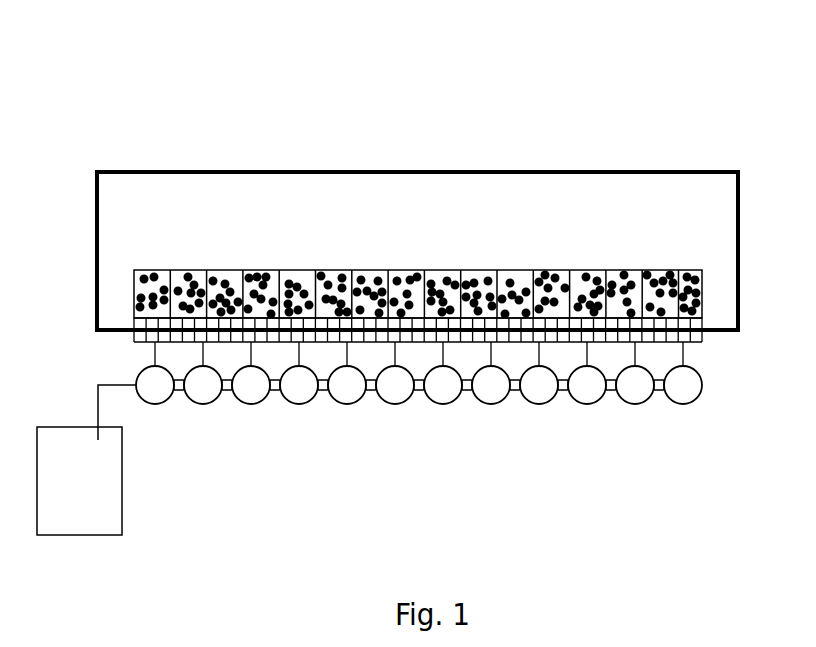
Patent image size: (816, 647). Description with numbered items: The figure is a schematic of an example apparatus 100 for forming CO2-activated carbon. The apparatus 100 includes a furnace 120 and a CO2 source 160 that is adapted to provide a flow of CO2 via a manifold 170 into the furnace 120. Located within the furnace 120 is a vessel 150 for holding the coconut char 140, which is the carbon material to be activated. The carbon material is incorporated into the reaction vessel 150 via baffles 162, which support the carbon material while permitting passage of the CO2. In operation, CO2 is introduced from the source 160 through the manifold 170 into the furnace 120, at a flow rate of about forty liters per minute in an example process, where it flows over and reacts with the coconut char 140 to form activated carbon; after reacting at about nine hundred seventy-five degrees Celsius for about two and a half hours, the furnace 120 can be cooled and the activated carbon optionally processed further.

The apparatus 100 is at (537, 103).
The furnace 120 is at (242, 172).
The coconut char 140 is at (257, 268).
The vessel 150 is at (531, 268).
The CO2 source 160 is at (122, 462).
The baffles 162 is at (622, 347).
The manifold 170 is at (404, 400).